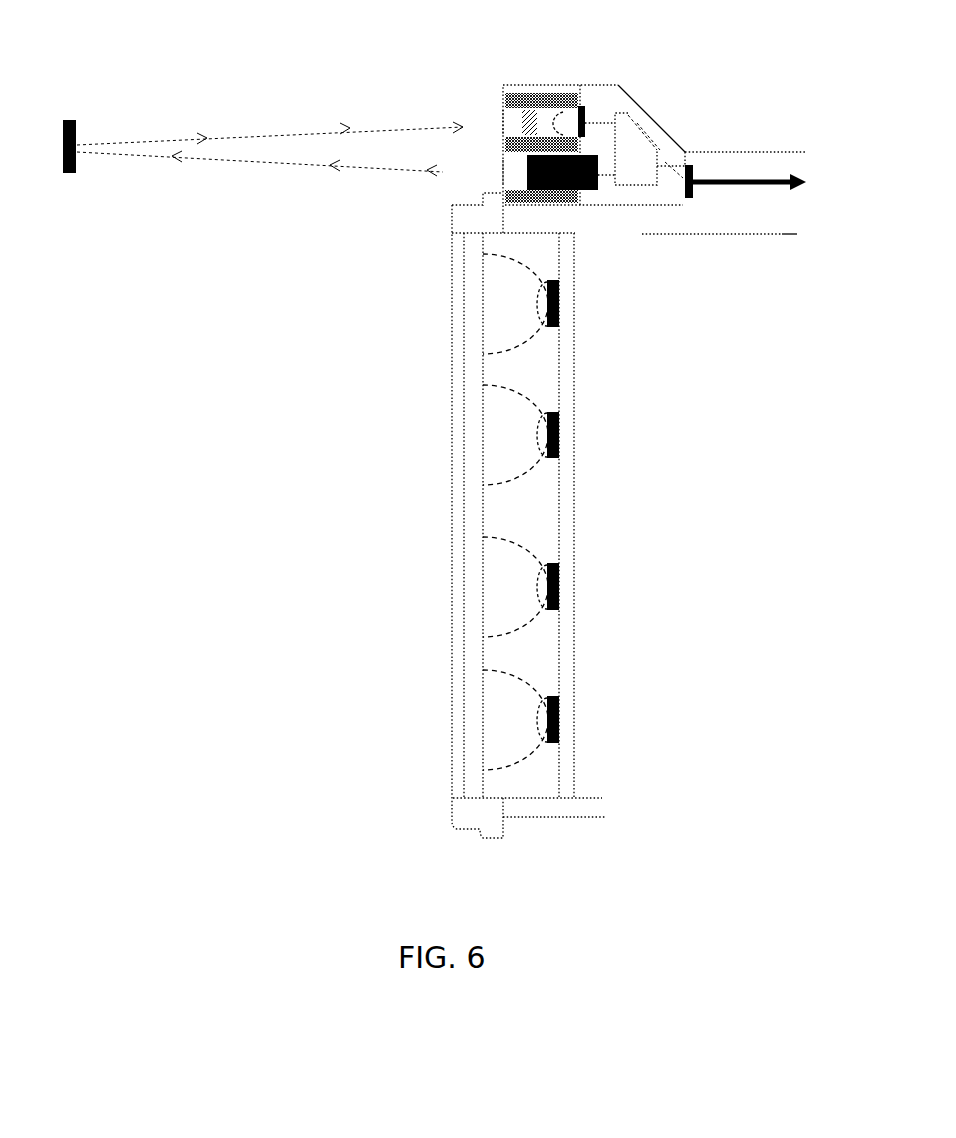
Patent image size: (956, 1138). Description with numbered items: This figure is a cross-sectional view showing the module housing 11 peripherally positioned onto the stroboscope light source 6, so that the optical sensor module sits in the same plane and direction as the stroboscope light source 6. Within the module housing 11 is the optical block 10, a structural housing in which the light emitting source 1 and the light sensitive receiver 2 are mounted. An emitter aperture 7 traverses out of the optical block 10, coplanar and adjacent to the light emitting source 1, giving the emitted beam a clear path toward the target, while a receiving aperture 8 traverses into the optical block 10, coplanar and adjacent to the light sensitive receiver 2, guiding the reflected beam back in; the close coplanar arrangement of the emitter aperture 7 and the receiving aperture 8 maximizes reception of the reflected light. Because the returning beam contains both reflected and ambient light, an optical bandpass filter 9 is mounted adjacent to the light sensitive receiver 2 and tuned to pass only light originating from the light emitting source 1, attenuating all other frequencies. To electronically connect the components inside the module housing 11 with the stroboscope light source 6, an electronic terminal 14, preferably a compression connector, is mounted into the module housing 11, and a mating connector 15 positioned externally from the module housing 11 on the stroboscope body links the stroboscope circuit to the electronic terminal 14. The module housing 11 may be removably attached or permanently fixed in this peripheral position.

The light emitting source 1 is at (583, 191).
The light sensitive receiver 2 is at (565, 116).
The stroboscope light source 6 is at (431, 470).
The emitter aperture 7 is at (489, 172).
The receiving aperture 8 is at (499, 122).
The optical bandpass filter 9 is at (526, 110).
The optical block 10 is at (506, 99).
The module housing 11 is at (636, 83).
The electronic terminal 14 is at (634, 140).
The mating connector 15 is at (695, 199).